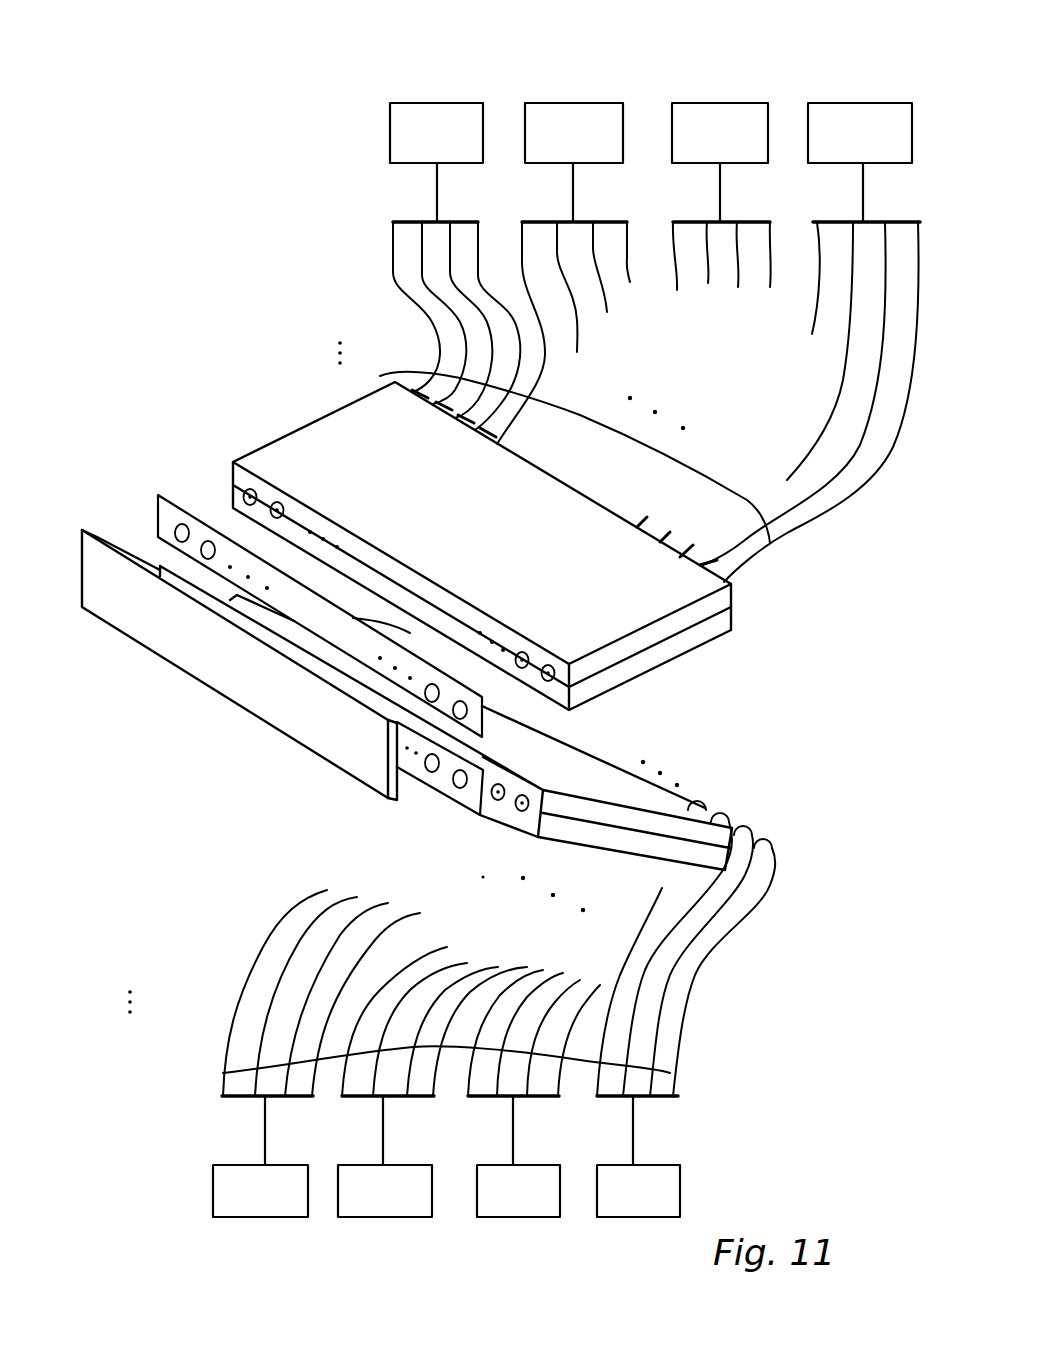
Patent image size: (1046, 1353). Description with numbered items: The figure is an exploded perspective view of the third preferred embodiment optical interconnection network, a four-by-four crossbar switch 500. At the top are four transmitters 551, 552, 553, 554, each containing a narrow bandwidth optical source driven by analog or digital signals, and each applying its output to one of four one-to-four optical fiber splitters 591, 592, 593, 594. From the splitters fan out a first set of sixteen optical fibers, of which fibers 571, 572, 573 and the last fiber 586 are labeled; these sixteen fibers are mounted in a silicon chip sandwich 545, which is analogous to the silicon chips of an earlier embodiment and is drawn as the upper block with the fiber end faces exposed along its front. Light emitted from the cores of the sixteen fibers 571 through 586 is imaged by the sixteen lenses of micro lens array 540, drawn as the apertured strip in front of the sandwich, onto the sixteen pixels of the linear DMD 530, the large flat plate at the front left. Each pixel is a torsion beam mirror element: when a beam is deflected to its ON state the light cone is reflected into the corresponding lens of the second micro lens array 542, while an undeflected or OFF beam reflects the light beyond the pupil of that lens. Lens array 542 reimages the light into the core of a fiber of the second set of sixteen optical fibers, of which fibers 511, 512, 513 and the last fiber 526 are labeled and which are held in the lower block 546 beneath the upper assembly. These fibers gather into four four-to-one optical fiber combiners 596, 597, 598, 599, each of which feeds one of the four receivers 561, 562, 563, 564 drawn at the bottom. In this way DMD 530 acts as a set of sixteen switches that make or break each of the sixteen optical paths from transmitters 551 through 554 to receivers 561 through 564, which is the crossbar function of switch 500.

The crossbar switch 500 is at (163, 251).
The optical fiber 511 is at (297, 930).
The optical fiber 512 is at (297, 955).
The optical fiber 513 is at (305, 995).
The optical fiber 526 is at (223, 1073).
The linear DMD 530 is at (275, 718).
The micro lens array 540 is at (158, 512).
The micro lens array 542 is at (440, 797).
The silicon chip sandwich 545 is at (282, 437).
The receiving fiber holder block 546 is at (613, 757).
The transmitter 551 is at (438, 105).
The transmitter 552 is at (583, 103).
The transmitter 553 is at (707, 107).
The transmitter 554 is at (840, 108).
The receiver 561 is at (264, 1218).
The receiver 562 is at (384, 1218).
The receiver 563 is at (518, 1218).
The receiver 564 is at (636, 1218).
The optical fiber 571 is at (393, 260).
The optical fiber 572 is at (422, 287).
The optical fiber 573 is at (478, 312).
The optical fiber 586 is at (380, 376).
The 1:4 optical fiber splitter 591 is at (393, 308).
The 1:4 optical fiber splitter 592 is at (567, 221).
The 1:4 optical fiber splitter 593 is at (707, 221).
The 1:4 optical fiber splitter 594 is at (857, 221).
The 4:1 optical fiber combiner 596 is at (260, 1010).
The 4:1 optical fiber combiner 597 is at (380, 1098).
The 4:1 optical fiber combiner 598 is at (507, 1098).
The 4:1 optical fiber combiner 599 is at (630, 1098).